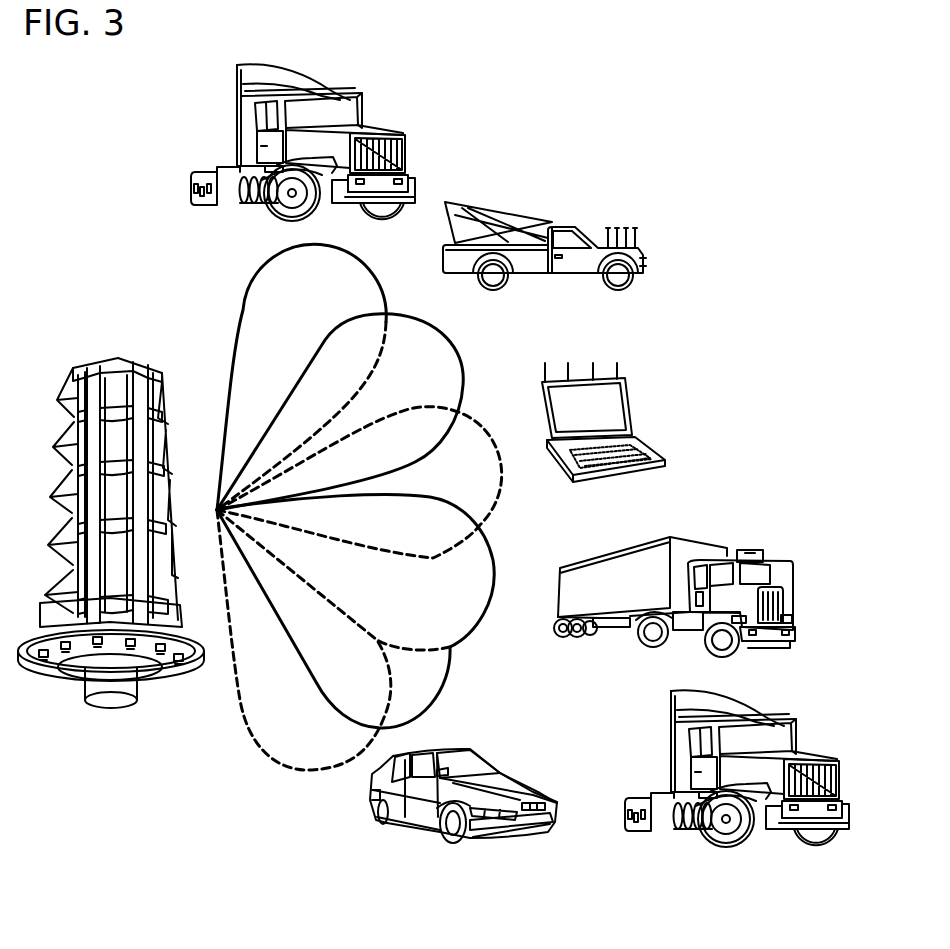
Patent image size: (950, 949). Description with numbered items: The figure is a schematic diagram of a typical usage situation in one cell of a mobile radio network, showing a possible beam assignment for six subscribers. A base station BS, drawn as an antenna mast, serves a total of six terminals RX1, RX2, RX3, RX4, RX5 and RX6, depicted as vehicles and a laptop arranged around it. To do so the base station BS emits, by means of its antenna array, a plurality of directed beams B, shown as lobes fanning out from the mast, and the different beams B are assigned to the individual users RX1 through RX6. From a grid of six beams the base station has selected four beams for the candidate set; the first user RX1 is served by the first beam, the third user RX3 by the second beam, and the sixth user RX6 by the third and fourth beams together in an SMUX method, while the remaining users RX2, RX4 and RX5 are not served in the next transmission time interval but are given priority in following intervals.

The base station BS is at (94, 375).
The directed beams B is at (351, 276).
The first user terminal RX1 is at (487, 832).
The second user terminal RX2 is at (615, 410).
The third user terminal RX3 is at (752, 548).
The fourth user terminal RX4 is at (777, 742).
The fifth user terminal RX5 is at (347, 112).
The sixth user terminal RX6 is at (574, 224).